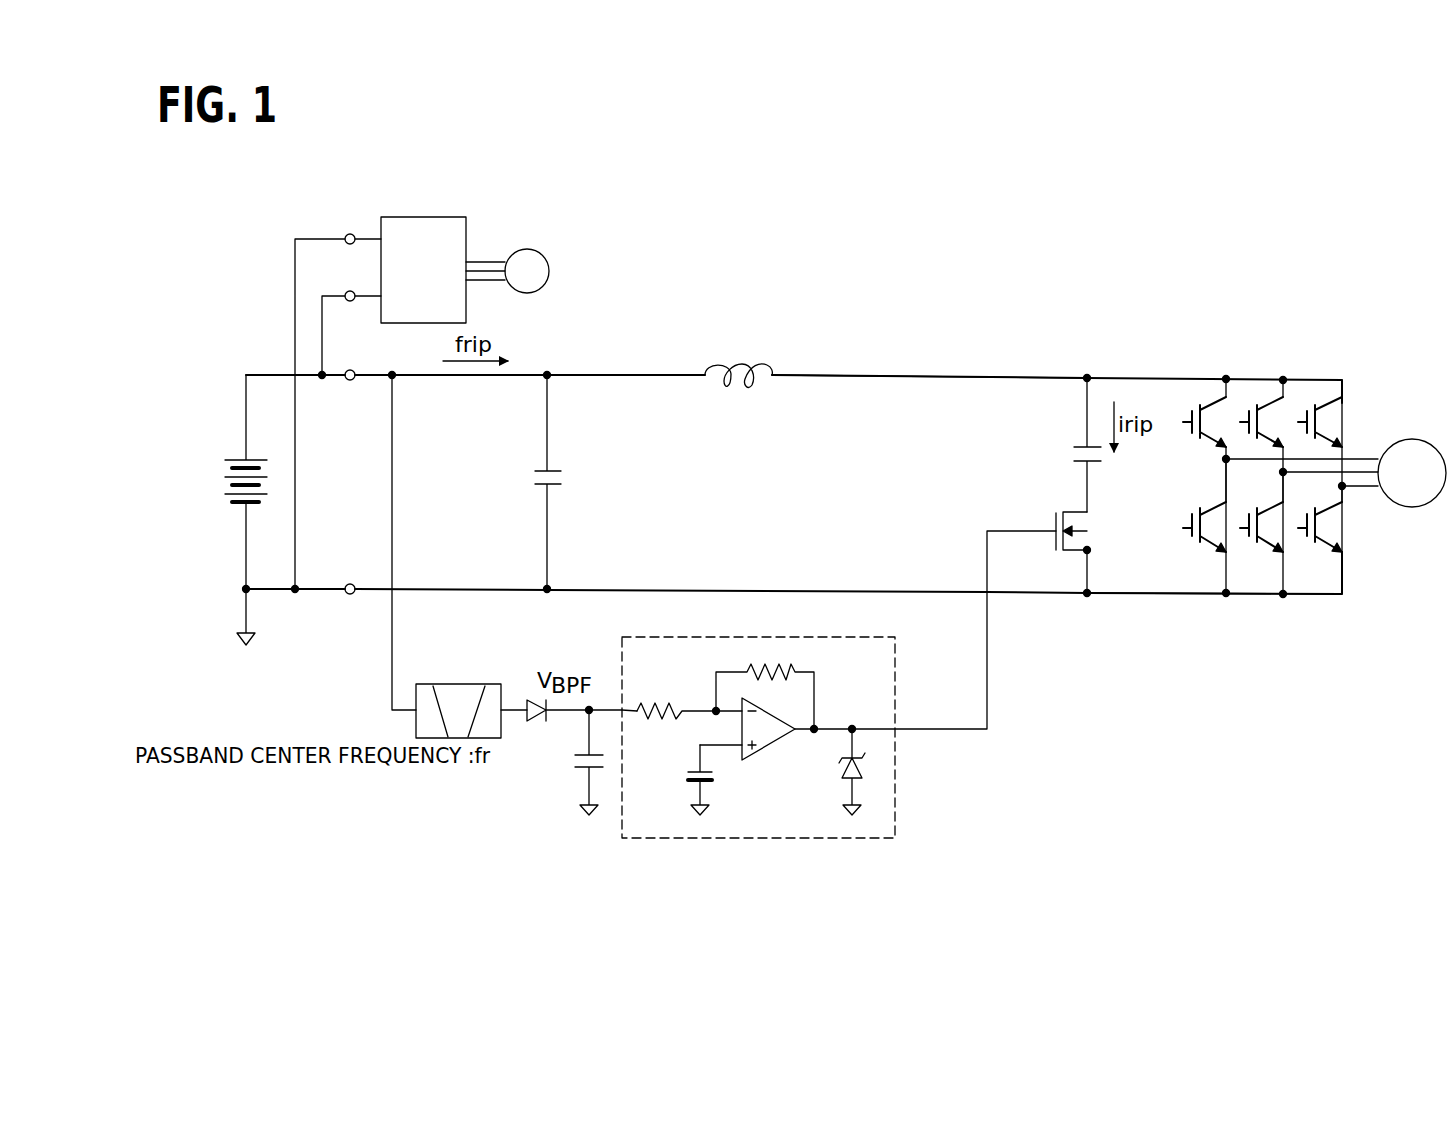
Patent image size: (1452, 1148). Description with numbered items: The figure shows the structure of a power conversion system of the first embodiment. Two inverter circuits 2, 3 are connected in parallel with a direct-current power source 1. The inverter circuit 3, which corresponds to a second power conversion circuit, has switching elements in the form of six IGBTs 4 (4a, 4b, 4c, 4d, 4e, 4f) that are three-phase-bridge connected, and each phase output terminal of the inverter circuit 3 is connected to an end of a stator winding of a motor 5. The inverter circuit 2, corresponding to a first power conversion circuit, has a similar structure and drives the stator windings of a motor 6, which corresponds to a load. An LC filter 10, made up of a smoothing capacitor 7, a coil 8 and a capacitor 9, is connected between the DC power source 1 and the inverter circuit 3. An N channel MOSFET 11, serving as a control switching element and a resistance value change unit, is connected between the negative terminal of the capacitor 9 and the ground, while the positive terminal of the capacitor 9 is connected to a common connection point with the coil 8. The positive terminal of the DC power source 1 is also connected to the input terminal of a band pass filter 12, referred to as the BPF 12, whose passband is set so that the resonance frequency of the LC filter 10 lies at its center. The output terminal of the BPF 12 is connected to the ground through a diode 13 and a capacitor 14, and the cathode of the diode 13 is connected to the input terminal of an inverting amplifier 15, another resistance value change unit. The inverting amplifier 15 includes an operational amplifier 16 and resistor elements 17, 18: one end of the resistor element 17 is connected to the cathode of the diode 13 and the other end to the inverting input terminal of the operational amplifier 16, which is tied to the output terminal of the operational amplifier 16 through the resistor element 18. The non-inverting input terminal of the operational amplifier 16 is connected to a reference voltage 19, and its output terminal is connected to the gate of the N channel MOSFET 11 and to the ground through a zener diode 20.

The direct-current (DC) power source 1 is at (222, 466).
The inverter circuit 2 is at (426, 217).
The inverter circuit 3 is at (1270, 472).
The IGBTs 4 is at (1318, 631).
The IGBT 4a is at (1188, 418).
The IGBT 4b is at (1188, 526).
The IGBT 4c is at (1265, 400).
The IGBT 4d is at (1264, 548).
The IGBT 4e is at (1336, 420).
The IGBT 4f is at (1338, 527).
The motor 5 is at (1412, 440).
The motor 6 is at (546, 255).
The smoothing capacitor 7 is at (570, 478).
The coil 8 is at (741, 365).
The capacitor 9 is at (1072, 452).
The LC filter 10 is at (948, 350).
The N channel MOSFET 11 is at (1090, 521).
The band pass filter 12 is at (460, 684).
The diode 13 is at (541, 724).
The capacitor 14 is at (572, 767).
The inverting amplifier 15 is at (758, 770).
The operational amplifier 16 is at (770, 745).
The resistor element 17 is at (668, 698).
The resistor element 18 is at (790, 660).
The reference voltage 19 is at (682, 775).
The zener diode 20 is at (840, 770).